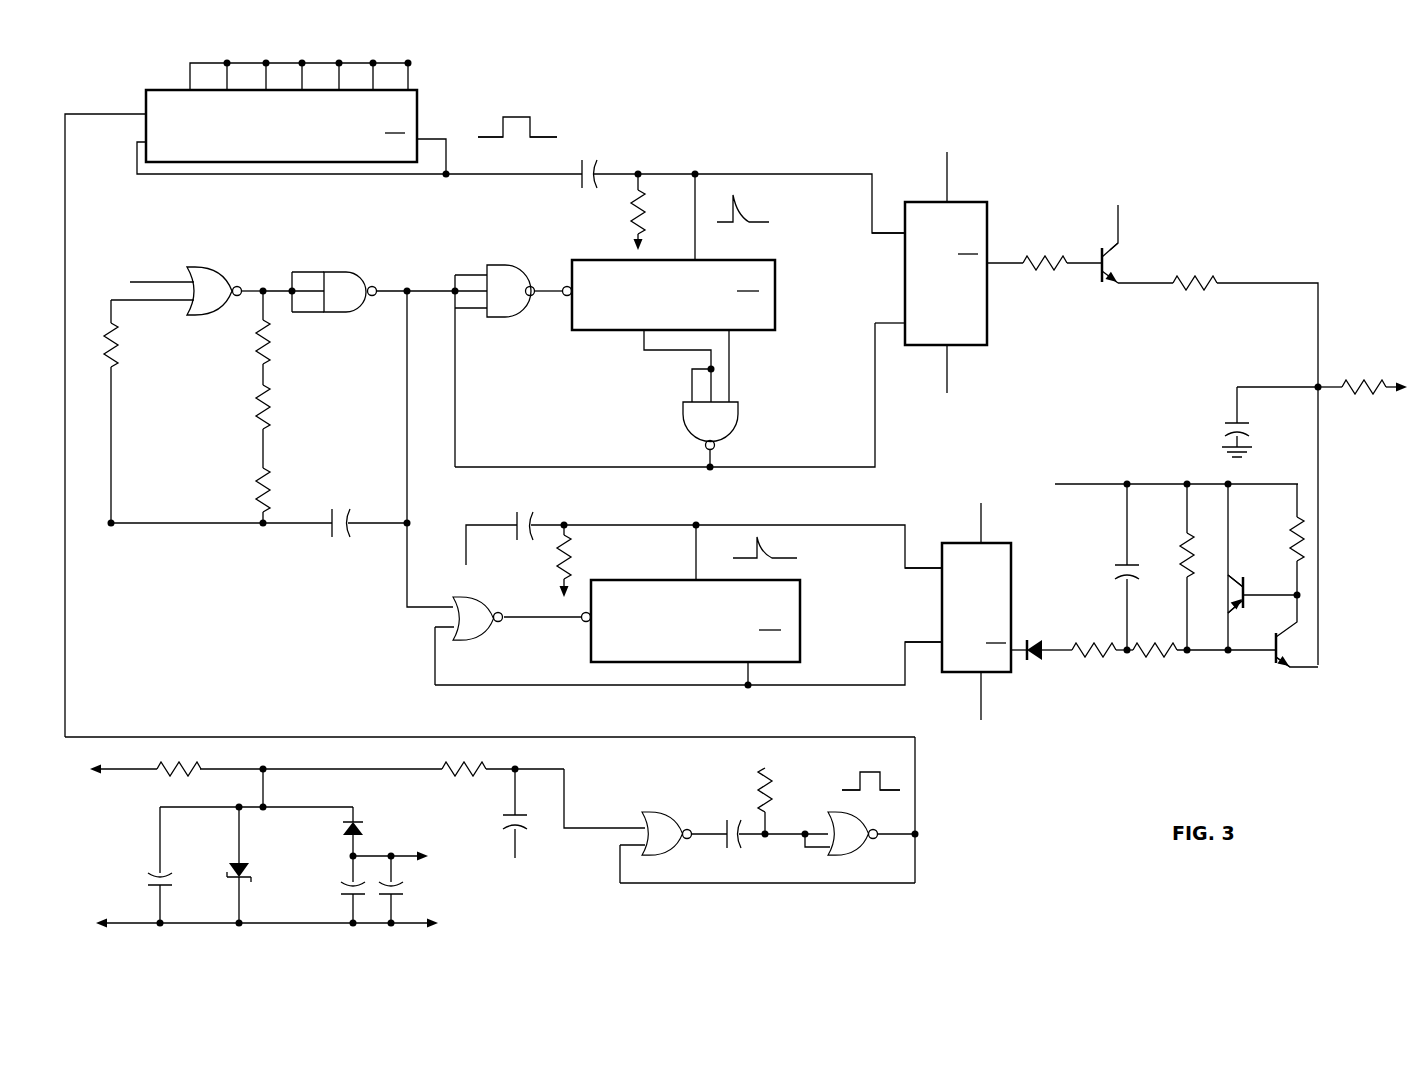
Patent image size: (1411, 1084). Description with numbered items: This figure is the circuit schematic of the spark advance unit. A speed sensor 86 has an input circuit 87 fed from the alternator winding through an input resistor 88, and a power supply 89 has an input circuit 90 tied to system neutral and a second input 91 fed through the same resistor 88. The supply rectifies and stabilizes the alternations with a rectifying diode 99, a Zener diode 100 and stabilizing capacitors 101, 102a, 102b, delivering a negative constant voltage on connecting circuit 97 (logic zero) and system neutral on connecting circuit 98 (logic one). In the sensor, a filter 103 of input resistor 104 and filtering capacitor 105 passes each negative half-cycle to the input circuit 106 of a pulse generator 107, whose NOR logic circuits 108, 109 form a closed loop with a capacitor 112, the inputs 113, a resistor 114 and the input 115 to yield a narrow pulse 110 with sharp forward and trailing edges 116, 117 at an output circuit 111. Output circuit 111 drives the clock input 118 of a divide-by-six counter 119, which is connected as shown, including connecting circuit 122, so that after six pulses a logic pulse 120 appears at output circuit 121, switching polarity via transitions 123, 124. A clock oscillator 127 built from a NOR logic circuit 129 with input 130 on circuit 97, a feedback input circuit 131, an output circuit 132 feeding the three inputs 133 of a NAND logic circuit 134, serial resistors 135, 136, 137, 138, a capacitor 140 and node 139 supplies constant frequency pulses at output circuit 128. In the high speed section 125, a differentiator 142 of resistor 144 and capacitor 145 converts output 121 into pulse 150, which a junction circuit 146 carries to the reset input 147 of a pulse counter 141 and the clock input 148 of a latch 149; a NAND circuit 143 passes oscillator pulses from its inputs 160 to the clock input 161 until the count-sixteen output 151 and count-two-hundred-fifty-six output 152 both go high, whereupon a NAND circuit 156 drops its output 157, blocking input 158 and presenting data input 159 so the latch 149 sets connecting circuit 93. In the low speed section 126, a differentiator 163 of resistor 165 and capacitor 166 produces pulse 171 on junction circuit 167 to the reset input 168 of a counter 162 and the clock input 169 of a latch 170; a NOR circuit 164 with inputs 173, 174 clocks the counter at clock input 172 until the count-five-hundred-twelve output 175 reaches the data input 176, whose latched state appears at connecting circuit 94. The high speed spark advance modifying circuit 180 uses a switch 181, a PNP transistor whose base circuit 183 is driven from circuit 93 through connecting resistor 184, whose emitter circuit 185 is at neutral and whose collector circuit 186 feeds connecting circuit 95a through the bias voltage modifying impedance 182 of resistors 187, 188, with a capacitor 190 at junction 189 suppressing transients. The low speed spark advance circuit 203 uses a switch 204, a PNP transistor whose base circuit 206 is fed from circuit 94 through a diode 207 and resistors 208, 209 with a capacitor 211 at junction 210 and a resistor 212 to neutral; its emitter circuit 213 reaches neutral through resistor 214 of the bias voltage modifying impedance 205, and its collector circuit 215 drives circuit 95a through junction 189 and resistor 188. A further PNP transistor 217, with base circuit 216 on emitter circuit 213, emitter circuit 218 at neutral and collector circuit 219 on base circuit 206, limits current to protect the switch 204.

The speed sensor 86 is at (978, 827).
The input circuit 87 is at (244, 766).
The input resistor 88 is at (160, 773).
The power supply 89 is at (484, 912).
The input circuit 90 is at (130, 920).
The second input 91 is at (265, 786).
The connecting circuit 93 is at (1002, 262).
The connecting circuit 94 is at (1019, 647).
The connecting circuit 95a is at (1390, 392).
The connecting circuit 97 is at (415, 60).
The connecting circuit 98 is at (1118, 226).
The rectifying diode 99 is at (359, 826).
The Zener diode 100 is at (243, 867).
The stabilizing capacitor 101 is at (164, 872).
The stabilizing capacitor 102a is at (344, 884).
The stabilizing capacitor 102b is at (400, 880).
The filter 103 is at (582, 768).
The input resistor 104 is at (452, 774).
The filtering capacitor 105 is at (524, 813).
The input circuit 106 is at (628, 820).
The pulse generator 107 is at (620, 886).
The NOR logic circuit 108 is at (658, 817).
The NOR logic circuit 109 is at (855, 856).
The narrow rectangular pulse 110 is at (870, 768).
The output circuit 111 is at (916, 841).
The capacitor 112 is at (724, 840).
The inputs 113 is at (822, 830).
The resistor 114 is at (762, 791).
The input 115 is at (622, 845).
The forward edge 116 is at (844, 787).
The trailing edge 117 is at (900, 786).
The clock input 118 is at (126, 112).
The divide-by-six counter 119 is at (146, 98).
The logic pulse 120 is at (510, 114).
The output circuit 121 is at (440, 135).
The feedback line 122 is at (134, 156).
The transition 123 is at (502, 130).
The transition 124 is at (531, 124).
The high speed section 125 is at (592, 130).
The low speed section 126 is at (562, 492).
The clock oscillator 127 is at (414, 252).
The output circuit 128 is at (390, 284).
The NOR logic circuit 129 is at (200, 310).
The input 130 is at (180, 268).
The feedback input circuit 131 is at (136, 298).
The output circuit 132 is at (249, 278).
The inputs 133 is at (322, 273).
The NAND logic circuit 134 is at (338, 314).
The resistor 135 is at (272, 346).
The resistor 136 is at (270, 406).
The resistor 137 is at (270, 478).
The resistor 138 is at (113, 360).
The node 139 is at (260, 520).
The capacitor 140 is at (349, 523).
The pulse counter 141 is at (673, 295).
The differentiator 142 is at (658, 157).
The NAND circuit 143 is at (498, 318).
The resistor 144 is at (632, 214).
The capacitor 145 is at (598, 170).
The junction circuit 146 is at (780, 174).
The reset input 147 is at (698, 251).
The clock input 148 is at (898, 232).
The latch 149 is at (903, 268).
The pulse 150 is at (730, 196).
The count 16 decimal output 151 is at (644, 345).
The count 256 decimal output 152 is at (736, 345).
The NAND circuit 156 is at (698, 433).
The output 157 is at (717, 465).
The input 158 is at (470, 342).
The data input 159 is at (900, 320).
The inputs 160 is at (460, 276).
The clock input 161 is at (558, 286).
The counter 162 is at (695, 621).
The differentiator 163 is at (569, 517).
The NOR circuit 164 is at (478, 637).
The resistor 165 is at (573, 562).
The capacitor 166 is at (510, 516).
The junction circuit 167 is at (746, 524).
The reset input 168 is at (694, 561).
The clock input 169 is at (920, 564).
The latch 170 is at (942, 603).
The pulse 171 is at (746, 548).
The clock input 172 is at (572, 626).
The input 173 is at (438, 606).
The input 174 is at (437, 629).
The count 512 decimal output 175 is at (750, 679).
The data input 176 is at (906, 644).
The high speed spark advance modifying circuit 180 is at (1312, 229).
The switch 181 is at (1215, 243).
The bias voltage modifying impedance 182 is at (1302, 368).
The base circuit 183 is at (1094, 242).
The connecting resistor 184 is at (1045, 274).
The emitter circuit 185 is at (1120, 244).
The collector circuit 186 is at (1112, 286).
The resistor 187 is at (1210, 284).
The resistor 188 is at (1360, 384).
The junction 189 is at (1316, 386).
The capacitor 190 is at (1234, 426).
The low speed spark advance circuit 203 is at (1066, 438).
The switch 204 is at (1310, 649).
The bias voltage modifying impedance 205 is at (1329, 513).
The base circuit 206 is at (1242, 657).
The diode 207 is at (1040, 666).
The resistor 208 is at (1106, 646).
The resistor 209 is at (1154, 655).
The junction 210 is at (1126, 654).
The capacitor 211 is at (1124, 553).
The resistor 212 is at (1183, 553).
The emitter circuit 213 is at (1300, 618).
The resistor 214 is at (1294, 536).
The collector circuit 215 is at (1294, 670).
The base circuit 216 is at (1263, 595).
The PNP type transistor 217 is at (1231, 600).
The emitter circuit 218 is at (1236, 582).
The collector circuit 219 is at (1241, 607).